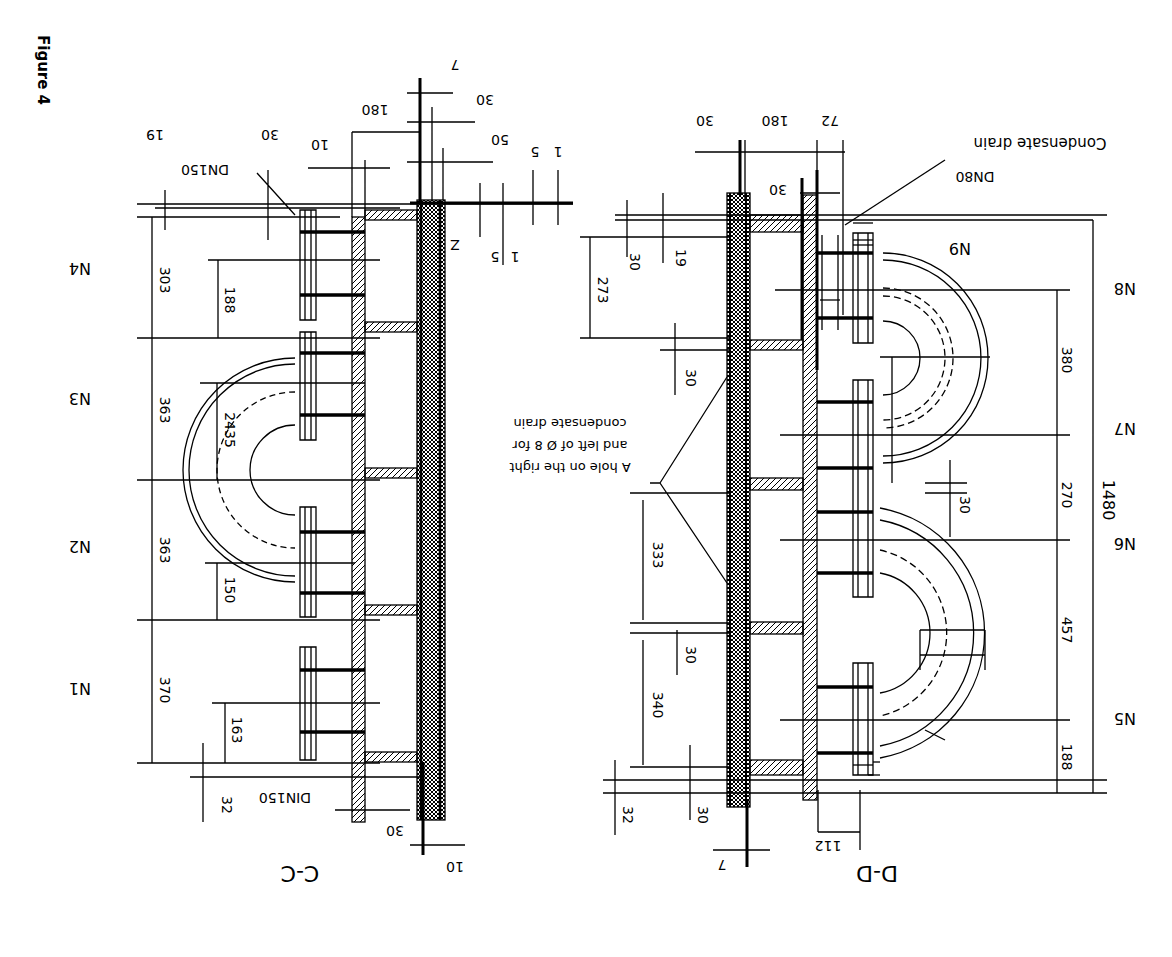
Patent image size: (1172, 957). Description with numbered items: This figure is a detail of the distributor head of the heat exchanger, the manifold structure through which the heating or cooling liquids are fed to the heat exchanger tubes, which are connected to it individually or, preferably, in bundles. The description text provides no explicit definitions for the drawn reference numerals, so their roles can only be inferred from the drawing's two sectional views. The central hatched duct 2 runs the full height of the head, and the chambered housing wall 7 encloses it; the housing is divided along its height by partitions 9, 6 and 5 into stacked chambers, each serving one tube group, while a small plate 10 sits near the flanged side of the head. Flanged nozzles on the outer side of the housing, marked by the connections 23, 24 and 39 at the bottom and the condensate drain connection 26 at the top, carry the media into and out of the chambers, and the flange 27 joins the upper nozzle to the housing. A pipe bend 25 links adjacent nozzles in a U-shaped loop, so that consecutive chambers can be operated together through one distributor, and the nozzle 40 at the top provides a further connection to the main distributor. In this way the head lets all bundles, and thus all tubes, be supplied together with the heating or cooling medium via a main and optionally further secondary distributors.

The flue gas pipe 2 is at (445, 335).
The bottom partition 5 is at (365, 655).
The intermediate partition 6 is at (365, 515).
The tank wall 7 is at (365, 228).
The partition plate 9 is at (365, 405).
The plate 10 is at (828, 308).
The connection 23 is at (857, 760).
The connection 24 is at (880, 760).
The pipe bend 25 is at (935, 737).
The condensate drain connection 26 is at (853, 223).
The flange 27 is at (830, 257).
The connection 39 is at (875, 775).
The nozzle 40 is at (873, 243).